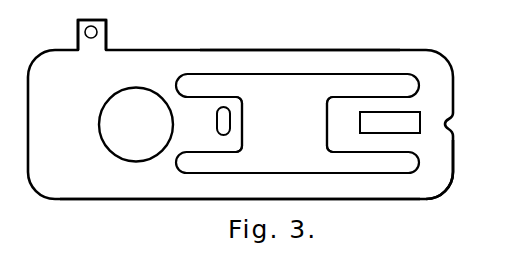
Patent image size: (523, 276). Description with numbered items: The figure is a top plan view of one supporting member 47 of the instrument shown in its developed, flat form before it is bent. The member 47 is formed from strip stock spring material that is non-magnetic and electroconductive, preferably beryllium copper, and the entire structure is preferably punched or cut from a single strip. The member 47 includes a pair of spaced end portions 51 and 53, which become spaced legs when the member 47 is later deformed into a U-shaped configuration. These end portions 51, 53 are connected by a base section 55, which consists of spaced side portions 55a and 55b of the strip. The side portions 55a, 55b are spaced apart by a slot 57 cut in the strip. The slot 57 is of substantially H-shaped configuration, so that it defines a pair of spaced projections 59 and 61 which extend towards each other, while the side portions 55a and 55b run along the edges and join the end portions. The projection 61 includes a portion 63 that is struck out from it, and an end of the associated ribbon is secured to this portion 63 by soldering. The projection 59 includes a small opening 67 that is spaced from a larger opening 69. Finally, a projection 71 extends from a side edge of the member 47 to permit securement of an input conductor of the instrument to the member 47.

The supporting member 47 is at (143, 50).
The end portion 51 is at (123, 201).
The end portion 53 is at (443, 178).
The base section 55 is at (273, 65).
The side portion 55a is at (370, 200).
The side portion 55b is at (397, 50).
The slot 57 is at (287, 83).
The projection 59 is at (231, 100).
The projection 61 is at (335, 103).
The struck-out portion 63 is at (398, 126).
The small opening 67 is at (217, 122).
The larger opening 69 is at (111, 125).
The projection 71 is at (78, 29).